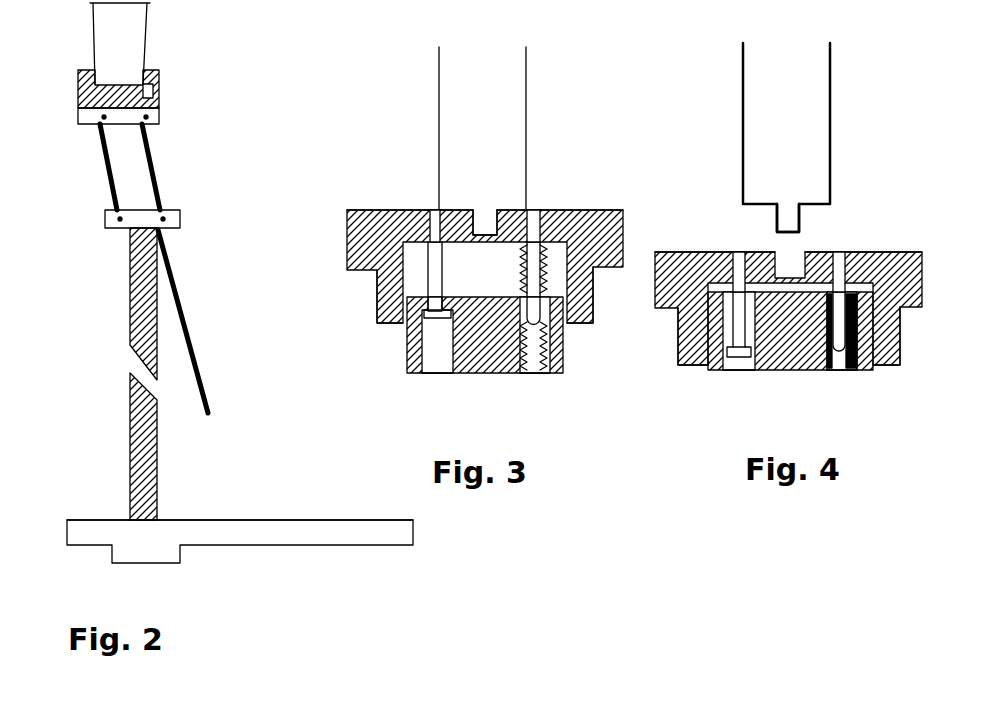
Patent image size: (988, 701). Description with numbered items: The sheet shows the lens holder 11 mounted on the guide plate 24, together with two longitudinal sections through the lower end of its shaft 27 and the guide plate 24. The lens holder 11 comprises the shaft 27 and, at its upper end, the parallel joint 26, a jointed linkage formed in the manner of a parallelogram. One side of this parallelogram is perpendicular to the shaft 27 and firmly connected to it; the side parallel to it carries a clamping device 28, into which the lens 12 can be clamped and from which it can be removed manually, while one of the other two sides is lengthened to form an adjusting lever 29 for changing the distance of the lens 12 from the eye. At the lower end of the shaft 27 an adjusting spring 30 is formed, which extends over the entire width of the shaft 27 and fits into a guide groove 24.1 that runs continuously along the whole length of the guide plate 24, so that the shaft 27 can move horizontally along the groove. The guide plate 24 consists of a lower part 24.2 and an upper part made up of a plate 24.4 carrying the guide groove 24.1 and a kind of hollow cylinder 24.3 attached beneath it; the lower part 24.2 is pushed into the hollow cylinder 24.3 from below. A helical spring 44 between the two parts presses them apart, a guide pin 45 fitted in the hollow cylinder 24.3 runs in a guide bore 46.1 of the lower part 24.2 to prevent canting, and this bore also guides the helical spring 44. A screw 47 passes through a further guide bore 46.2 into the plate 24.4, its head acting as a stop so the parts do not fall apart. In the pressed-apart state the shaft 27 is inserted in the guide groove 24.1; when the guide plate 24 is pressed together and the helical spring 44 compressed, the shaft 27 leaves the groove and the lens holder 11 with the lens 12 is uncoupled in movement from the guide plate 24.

In FIG. 2, the lens holder 11 is at (100, 300).
In FIG. 2, the lens 12 is at (147, 43).
In FIG. 2, the guide plate 24 is at (98, 518).
In FIG. 3, the guide plate 24 is at (378, 196).
In FIG. 4, the guide plate 24 is at (705, 235).
In FIG. 2, the guide groove 24.1 is at (320, 520).
In FIG. 3, the guide groove 24.1 is at (528, 212).
In FIG. 4, the guide groove 24.1 is at (792, 250).
In FIG. 3, the lower part 24.2 is at (407, 369).
In FIG. 4, the lower part 24.2 is at (710, 368).
In FIG. 3, the hollow cylinder 24.3 is at (369, 294).
In FIG. 4, the hollow cylinder 24.3 is at (677, 344).
In FIG. 3, the plate 24.4 is at (357, 231).
In FIG. 4, the plate 24.4 is at (662, 282).
In FIG. 2, the parallel joint 26 is at (165, 166).
In FIG. 2, the shaft 27 is at (122, 410).
In FIG. 3, the shaft 27 is at (423, 103).
In FIG. 4, the shaft 27 is at (718, 98).
In FIG. 2, the clamping device 28 is at (158, 96).
In FIG. 2, the adjusting lever 29 is at (196, 336).
In FIG. 3, the adjusting spring 30 is at (483, 215).
In FIG. 4, the adjusting spring 30 is at (787, 213).
In FIG. 3, the helical spring 44 is at (563, 345).
In FIG. 4, the helical spring 44 is at (881, 356).
In FIG. 3, the guide pin 45 is at (530, 283).
In FIG. 4, the guide pin 45 is at (845, 363).
In FIG. 3, the guide bore 46.1 is at (530, 376).
In FIG. 4, the guide bore 46.1 is at (835, 372).
In FIG. 3, the further guide bore 46.2 is at (433, 376).
In FIG. 4, the further guide bore 46.2 is at (728, 372).
In FIG. 3, the screw 47 is at (438, 278).
In FIG. 4, the screw 47 is at (743, 363).